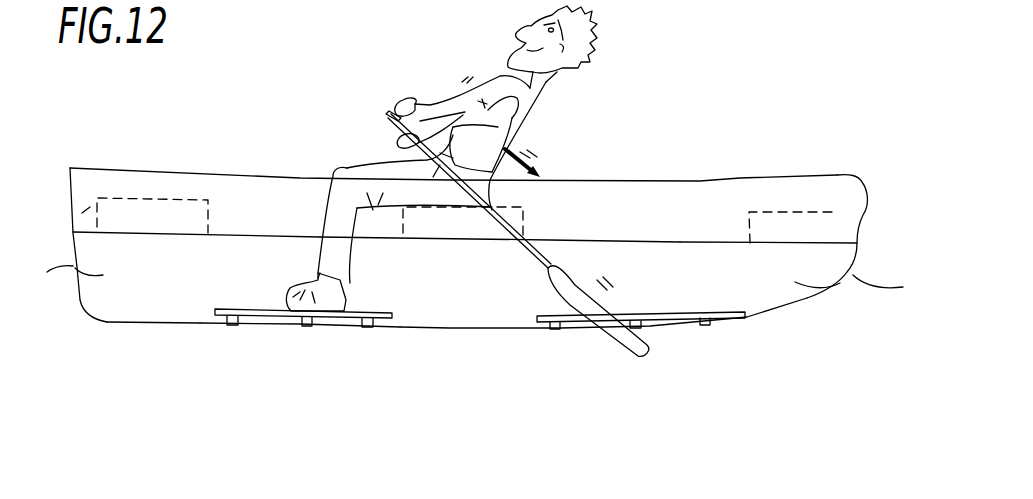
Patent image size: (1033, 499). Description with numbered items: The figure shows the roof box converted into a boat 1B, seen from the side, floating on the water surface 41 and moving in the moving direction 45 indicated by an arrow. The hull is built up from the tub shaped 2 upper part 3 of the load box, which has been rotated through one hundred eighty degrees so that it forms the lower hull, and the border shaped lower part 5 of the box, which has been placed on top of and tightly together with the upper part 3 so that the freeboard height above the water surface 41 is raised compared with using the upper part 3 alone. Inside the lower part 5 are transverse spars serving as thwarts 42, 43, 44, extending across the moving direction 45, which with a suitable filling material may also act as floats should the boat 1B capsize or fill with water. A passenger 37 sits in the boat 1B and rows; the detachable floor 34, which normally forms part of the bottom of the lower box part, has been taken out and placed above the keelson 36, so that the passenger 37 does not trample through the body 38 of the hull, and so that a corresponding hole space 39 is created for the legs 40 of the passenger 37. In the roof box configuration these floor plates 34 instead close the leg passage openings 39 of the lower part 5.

The boat 1B is at (708, 52).
The tub shaped 2 is at (823, 340).
The upper part 3 is at (152, 402).
The lower part 5 is at (100, 180).
The detachable floor 34 is at (570, 377).
The keelson 36 is at (455, 440).
The passenger 37 is at (585, 107).
The body 38 is at (215, 385).
The hole space 39 is at (685, 245).
The legs 40 is at (340, 222).
The water surface 41 is at (73, 340).
The thwart 42 is at (142, 212).
The thwart 43 is at (420, 370).
The thwart 44 is at (765, 223).
The moving direction 45 is at (752, 381).